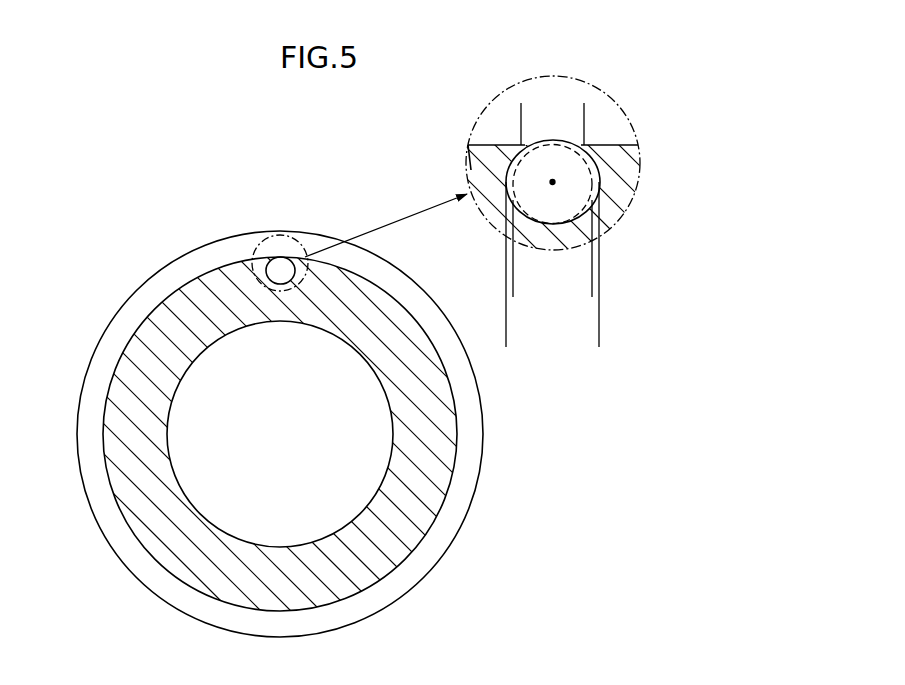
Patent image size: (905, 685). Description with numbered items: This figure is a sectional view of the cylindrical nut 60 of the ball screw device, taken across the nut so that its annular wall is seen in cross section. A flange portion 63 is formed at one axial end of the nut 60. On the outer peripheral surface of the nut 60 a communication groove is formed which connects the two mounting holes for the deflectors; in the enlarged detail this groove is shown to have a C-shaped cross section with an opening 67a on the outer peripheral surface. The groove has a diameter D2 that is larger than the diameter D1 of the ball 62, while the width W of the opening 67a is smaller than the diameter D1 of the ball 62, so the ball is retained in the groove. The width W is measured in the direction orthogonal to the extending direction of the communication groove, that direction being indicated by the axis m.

The cylindrical nut 60 is at (167, 252).
The ball 62 is at (617, 146).
The flange portion 63 is at (291, 238).
The opening 67a is at (522, 145).
The axis m is at (554, 184).
The width of the opening W is at (584, 108).
The diameter of the ball D1 is at (592, 292).
The diameter of the communication groove D2 is at (599, 339).